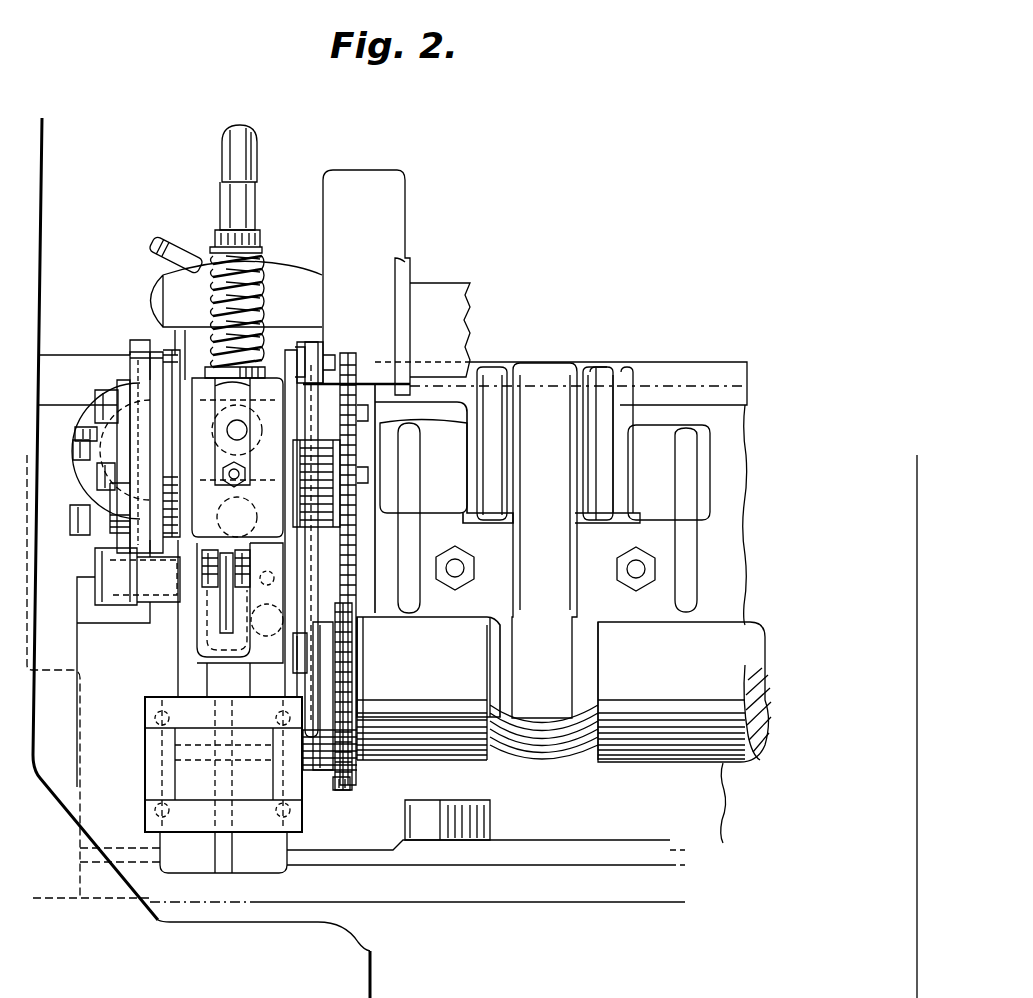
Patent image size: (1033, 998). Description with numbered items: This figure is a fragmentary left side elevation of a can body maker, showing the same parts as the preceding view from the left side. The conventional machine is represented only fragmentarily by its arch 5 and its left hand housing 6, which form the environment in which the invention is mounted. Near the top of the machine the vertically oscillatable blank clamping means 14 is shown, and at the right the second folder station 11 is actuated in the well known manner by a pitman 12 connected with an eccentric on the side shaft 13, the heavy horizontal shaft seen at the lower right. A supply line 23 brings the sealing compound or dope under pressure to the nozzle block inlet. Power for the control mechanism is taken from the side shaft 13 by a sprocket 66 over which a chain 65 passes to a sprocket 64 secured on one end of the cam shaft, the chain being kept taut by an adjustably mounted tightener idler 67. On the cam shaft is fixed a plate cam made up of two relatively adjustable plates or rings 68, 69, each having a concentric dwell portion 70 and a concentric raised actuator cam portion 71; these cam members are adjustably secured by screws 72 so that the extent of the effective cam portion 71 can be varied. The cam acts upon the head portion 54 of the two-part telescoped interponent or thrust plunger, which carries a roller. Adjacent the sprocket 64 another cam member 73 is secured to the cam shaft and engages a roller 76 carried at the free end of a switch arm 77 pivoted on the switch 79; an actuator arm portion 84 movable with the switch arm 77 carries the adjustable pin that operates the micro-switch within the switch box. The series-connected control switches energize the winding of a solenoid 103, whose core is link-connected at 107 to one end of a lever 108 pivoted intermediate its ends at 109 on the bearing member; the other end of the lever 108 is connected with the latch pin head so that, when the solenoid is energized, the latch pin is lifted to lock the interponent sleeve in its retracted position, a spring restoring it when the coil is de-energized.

The arch 5 is at (35, 195).
The left hand housing 6 is at (88, 785).
The second folder station 11 is at (603, 387).
The pitman 12 is at (550, 383).
The side shaft 13 is at (647, 747).
The blank clamping means 14 is at (374, 185).
The supply line 23 is at (171, 243).
The head portion 54 is at (45, 448).
The sprocket 64 is at (352, 360).
The chain 65 is at (348, 580).
The sprocket 66 is at (350, 785).
The tightener idler 67 is at (352, 662).
The cam plate 68 is at (135, 447).
The cam plate 69 is at (90, 497).
The dwell portion 70 is at (140, 470).
The actuator cam portion 71 is at (150, 400).
The screws 72 is at (103, 395).
The cam member 73 is at (360, 446).
The roller 76 is at (313, 350).
The switch arm 77 is at (305, 358).
The switch 79 is at (258, 507).
The actuator arm portion 84 is at (240, 430).
The solenoid 103 is at (302, 812).
The link connection 107 is at (227, 610).
The lever 108 is at (250, 570).
The pivot 109 is at (100, 575).